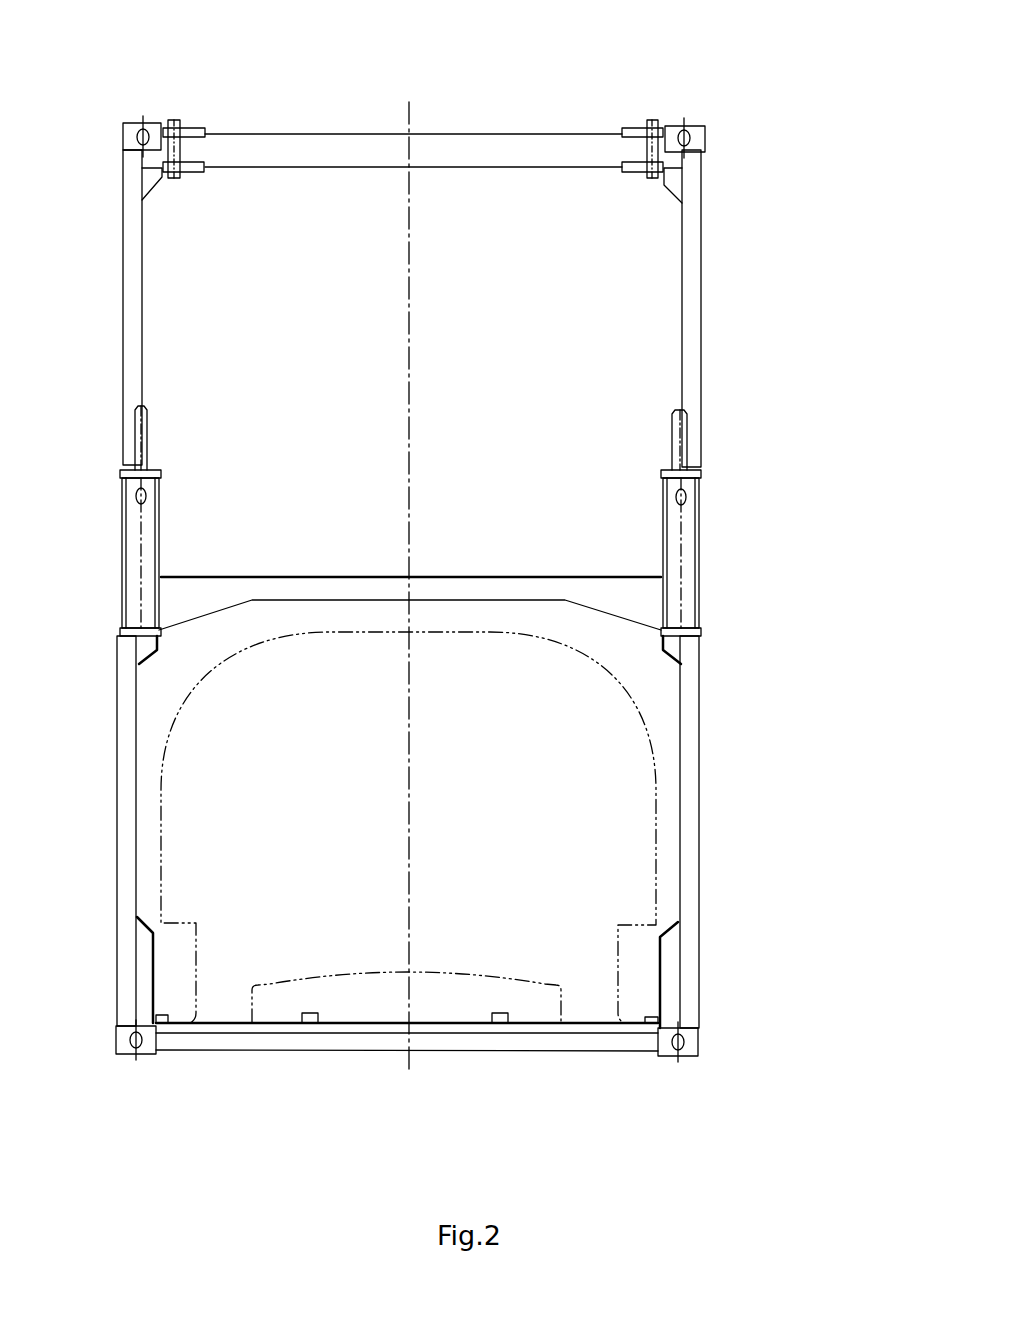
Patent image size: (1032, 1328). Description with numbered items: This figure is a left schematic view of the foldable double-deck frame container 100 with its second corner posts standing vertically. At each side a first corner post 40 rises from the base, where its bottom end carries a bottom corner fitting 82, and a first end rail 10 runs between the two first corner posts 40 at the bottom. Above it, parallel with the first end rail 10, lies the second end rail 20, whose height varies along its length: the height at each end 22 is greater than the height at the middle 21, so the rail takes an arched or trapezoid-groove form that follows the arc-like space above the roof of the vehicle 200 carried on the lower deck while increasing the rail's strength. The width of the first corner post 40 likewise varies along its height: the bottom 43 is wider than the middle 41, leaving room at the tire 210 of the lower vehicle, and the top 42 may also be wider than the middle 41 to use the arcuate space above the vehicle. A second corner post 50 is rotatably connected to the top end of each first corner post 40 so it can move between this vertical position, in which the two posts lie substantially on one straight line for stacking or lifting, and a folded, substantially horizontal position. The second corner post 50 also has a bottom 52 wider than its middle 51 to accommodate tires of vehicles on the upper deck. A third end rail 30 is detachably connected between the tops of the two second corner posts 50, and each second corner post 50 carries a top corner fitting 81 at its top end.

The frame container 100 is at (280, 76).
The third end rail 30 is at (472, 150).
The top corner fitting 81 is at (688, 145).
The second corner post 50 is at (511, 314).
The middle of the second corner post 51 is at (695, 325).
The bottom of the second corner post 52 is at (472, 442).
The first corner post 40 is at (508, 749).
The middle of the first corner post 41 is at (690, 740).
The top of the first corner post 42 is at (675, 652).
The bottom of the first corner post 43 is at (467, 972).
The bottom corner fitting 82 is at (683, 1045).
The first end rail 10 is at (512, 1043).
The second end rail 20 is at (410, 503).
The middle of the second end rail 21 is at (300, 588).
The end of the second end rail 22 is at (345, 452).
The vehicle 200 is at (173, 788).
The tire 210 is at (220, 988).